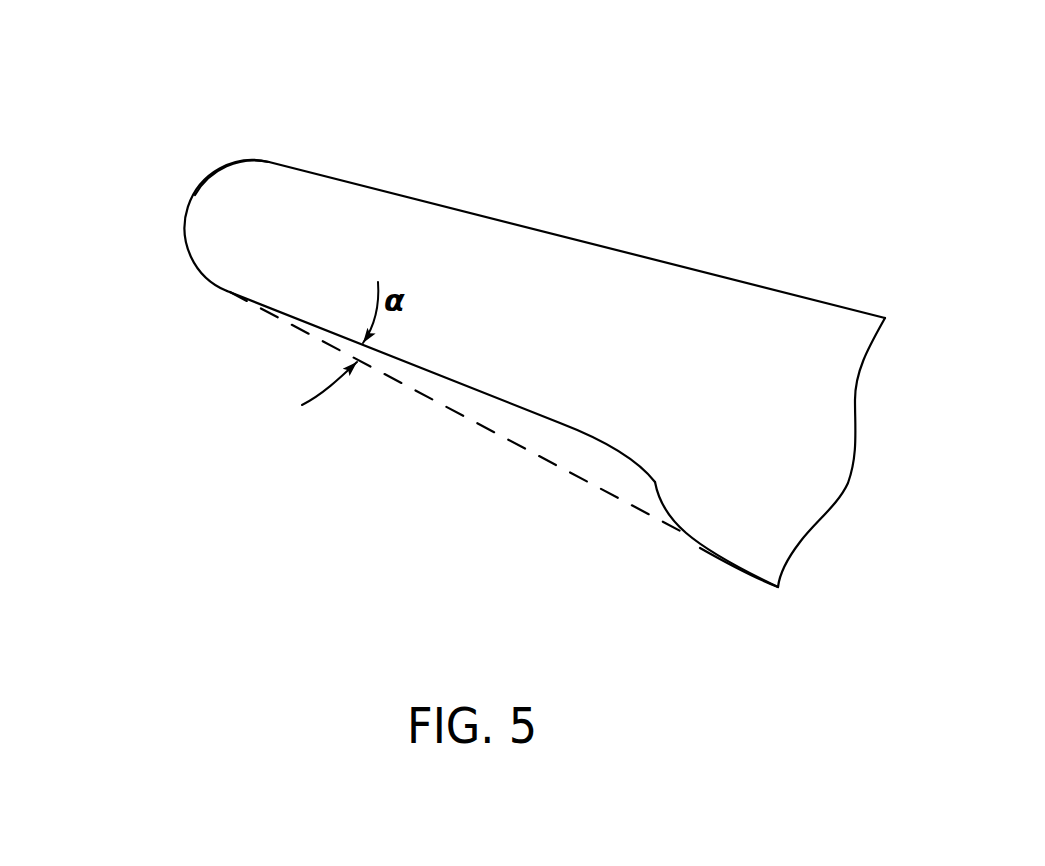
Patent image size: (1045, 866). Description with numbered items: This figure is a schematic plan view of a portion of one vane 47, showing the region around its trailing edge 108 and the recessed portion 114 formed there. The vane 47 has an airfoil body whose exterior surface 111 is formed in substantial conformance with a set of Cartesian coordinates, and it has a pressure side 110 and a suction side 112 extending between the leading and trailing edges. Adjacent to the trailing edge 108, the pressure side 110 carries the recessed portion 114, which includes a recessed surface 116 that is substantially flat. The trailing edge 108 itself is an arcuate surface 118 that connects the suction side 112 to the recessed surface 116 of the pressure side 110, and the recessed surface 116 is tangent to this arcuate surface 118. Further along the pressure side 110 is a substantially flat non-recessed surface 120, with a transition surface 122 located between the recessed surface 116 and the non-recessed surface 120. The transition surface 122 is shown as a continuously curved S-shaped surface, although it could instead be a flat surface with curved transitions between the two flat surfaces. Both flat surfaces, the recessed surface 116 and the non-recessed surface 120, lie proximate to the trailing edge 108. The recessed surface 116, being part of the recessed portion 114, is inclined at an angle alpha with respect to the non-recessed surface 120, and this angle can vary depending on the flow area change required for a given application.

The vane 47 is at (690, 98).
The trailing edge 108 is at (185, 213).
The pressure side 110 is at (593, 573).
The exterior surface 111 is at (750, 278).
The suction side 112 is at (655, 238).
The recessed portion 114 is at (410, 387).
The recessed surface 116 is at (305, 321).
The arcuate surface 118 is at (225, 166).
The non-recessed surface 120 is at (755, 577).
The transition surface 122 is at (655, 482).